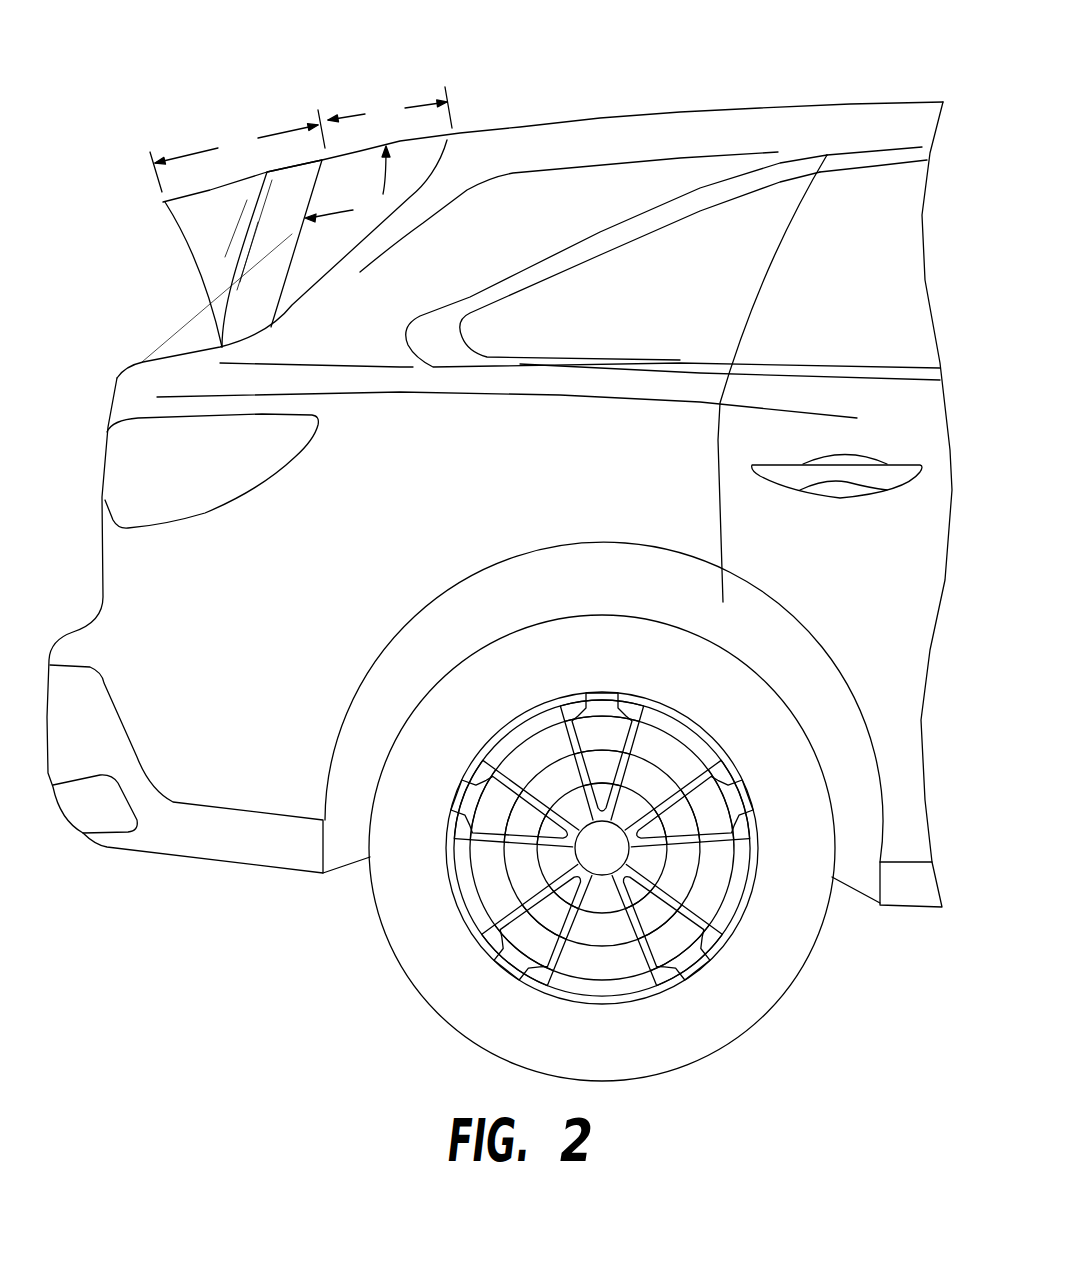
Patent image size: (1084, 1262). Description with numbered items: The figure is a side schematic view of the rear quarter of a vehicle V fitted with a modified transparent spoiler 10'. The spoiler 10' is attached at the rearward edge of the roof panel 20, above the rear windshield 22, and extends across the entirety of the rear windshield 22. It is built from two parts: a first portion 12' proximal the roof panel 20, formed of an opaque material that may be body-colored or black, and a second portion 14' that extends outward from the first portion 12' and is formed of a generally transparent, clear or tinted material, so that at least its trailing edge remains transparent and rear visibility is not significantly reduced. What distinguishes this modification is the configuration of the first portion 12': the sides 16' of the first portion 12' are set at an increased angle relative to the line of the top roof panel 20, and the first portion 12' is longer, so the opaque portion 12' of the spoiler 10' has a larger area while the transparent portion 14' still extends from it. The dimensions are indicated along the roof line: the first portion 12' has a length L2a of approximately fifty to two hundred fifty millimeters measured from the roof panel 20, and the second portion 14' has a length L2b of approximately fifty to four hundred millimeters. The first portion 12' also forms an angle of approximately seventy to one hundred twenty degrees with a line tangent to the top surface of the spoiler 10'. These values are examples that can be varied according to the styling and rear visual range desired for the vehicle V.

The spoiler 10' is at (319, 188).
The first portion 12' is at (313, 259).
The second portion 14' is at (172, 271).
The sides of the first portion 16' is at (552, 220).
The roof panel 20 is at (518, 128).
The rear windshield 22 is at (190, 343).
The length of the first portion L2a is at (390, 109).
The length of the second portion L2b is at (237, 151).
The vehicle V is at (683, 108).